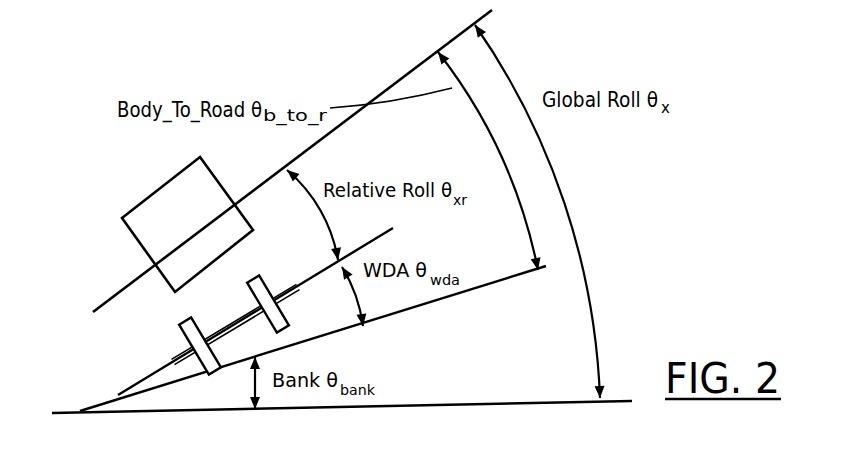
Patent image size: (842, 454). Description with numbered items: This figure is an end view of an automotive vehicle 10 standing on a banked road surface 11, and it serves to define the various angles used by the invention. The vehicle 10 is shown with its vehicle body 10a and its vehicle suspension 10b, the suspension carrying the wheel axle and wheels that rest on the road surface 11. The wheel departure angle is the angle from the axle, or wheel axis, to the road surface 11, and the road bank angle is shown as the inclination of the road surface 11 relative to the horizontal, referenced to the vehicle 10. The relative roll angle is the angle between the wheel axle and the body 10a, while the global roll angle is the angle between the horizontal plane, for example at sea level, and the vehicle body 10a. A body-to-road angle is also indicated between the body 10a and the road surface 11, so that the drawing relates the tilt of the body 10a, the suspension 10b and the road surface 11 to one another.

The vehicle 10 is at (92, 258).
The vehicle body 10a is at (148, 197).
The vehicle suspension 10b is at (260, 278).
The road surface 11 is at (428, 306).